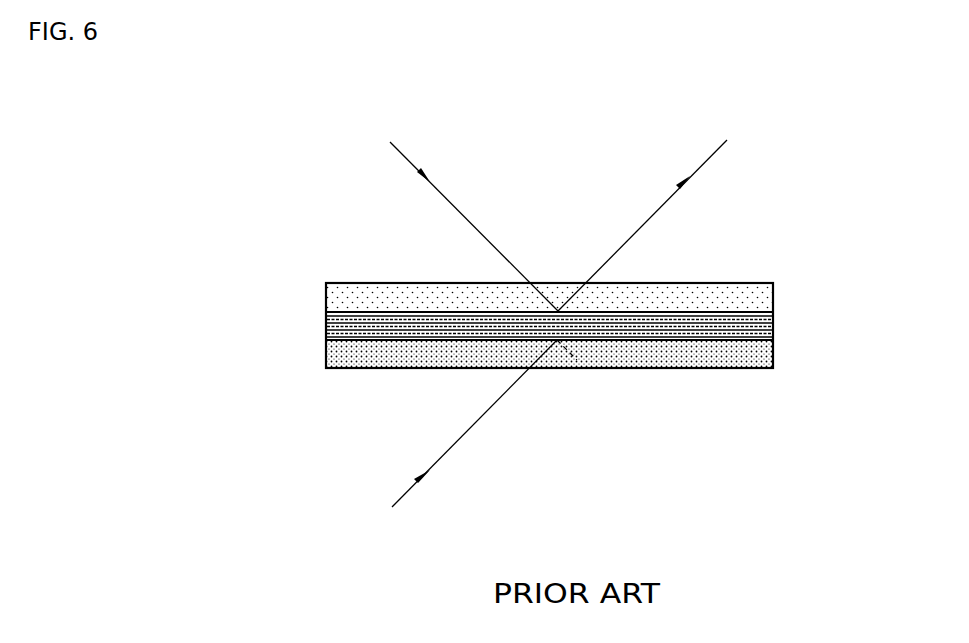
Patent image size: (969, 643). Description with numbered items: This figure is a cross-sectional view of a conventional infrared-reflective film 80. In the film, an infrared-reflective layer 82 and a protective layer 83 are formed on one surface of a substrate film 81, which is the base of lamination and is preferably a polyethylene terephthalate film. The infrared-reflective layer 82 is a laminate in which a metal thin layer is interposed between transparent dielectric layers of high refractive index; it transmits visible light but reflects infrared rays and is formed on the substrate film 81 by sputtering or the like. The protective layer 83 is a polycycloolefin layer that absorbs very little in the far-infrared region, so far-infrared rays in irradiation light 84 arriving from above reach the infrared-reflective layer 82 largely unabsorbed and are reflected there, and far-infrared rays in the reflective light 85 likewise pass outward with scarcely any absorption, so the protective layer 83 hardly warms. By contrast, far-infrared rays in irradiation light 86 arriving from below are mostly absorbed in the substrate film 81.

The infrared-reflective film 80 is at (797, 252).
The substrate film 81 is at (773, 355).
The infrared-reflective layer 82 is at (773, 325).
The protective layer 83 is at (773, 296).
The irradiation light 84 is at (460, 215).
The reflective light 85 is at (657, 215).
The irradiation light 86 is at (469, 438).